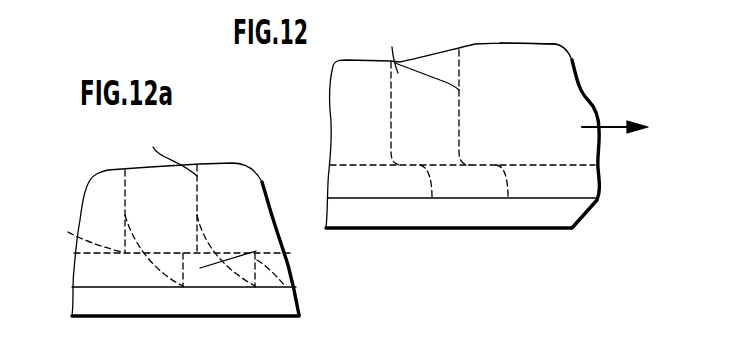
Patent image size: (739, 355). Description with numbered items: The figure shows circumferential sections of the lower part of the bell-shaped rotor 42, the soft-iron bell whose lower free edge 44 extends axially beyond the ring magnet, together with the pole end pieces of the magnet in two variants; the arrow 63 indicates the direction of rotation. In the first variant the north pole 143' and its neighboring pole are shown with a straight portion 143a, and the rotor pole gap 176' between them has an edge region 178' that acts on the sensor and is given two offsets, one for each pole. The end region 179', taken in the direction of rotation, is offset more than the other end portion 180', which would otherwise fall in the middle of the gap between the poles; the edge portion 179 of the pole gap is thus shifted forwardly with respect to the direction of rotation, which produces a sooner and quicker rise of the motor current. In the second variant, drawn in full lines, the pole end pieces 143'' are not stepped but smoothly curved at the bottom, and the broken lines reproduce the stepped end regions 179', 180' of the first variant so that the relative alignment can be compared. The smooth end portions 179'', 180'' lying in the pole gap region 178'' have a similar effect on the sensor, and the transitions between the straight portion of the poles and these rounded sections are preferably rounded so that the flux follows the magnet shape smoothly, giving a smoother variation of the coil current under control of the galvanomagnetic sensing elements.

In FIG. 12A, the bell-shaped rotor 42 is at (177, 207).
In FIG. 12, the bell-shaped rotor 42 is at (440, 117).
In FIG. 12, the lower free edge of the rotor bell 44 is at (580, 213).
In FIG. 12, the direction of rotation arrow 63 is at (612, 128).
In FIG. 12, the north pole 143' is at (451, 135).
In FIG. 12A, the pole end piece 143'' is at (153, 224).
In FIG. 12A, the straight portion of the poles 143a is at (142, 163).
In FIG. 12, the straight portion of the poles 143a is at (377, 46).
In FIG. 12, the rotor pole gap 176' is at (428, 55).
In FIG. 12, the region of the pole gap acting on the sensor 178' is at (462, 181).
In FIG. 12A, the pole gap region 178'' is at (241, 251).
In FIG. 12, the edge portion of the rotor pole gap 179 is at (529, 22).
In FIG. 12A, the offset end region 179' is at (209, 257).
In FIG. 12, the offset end region 179' is at (498, 233).
In FIG. 12A, the smooth end portion 179'' is at (210, 251).
In FIG. 12A, the other end portion 180' is at (77, 232).
In FIG. 12, the other end portion 180' is at (426, 231).
In FIG. 12A, the smooth end portion 180'' is at (158, 251).